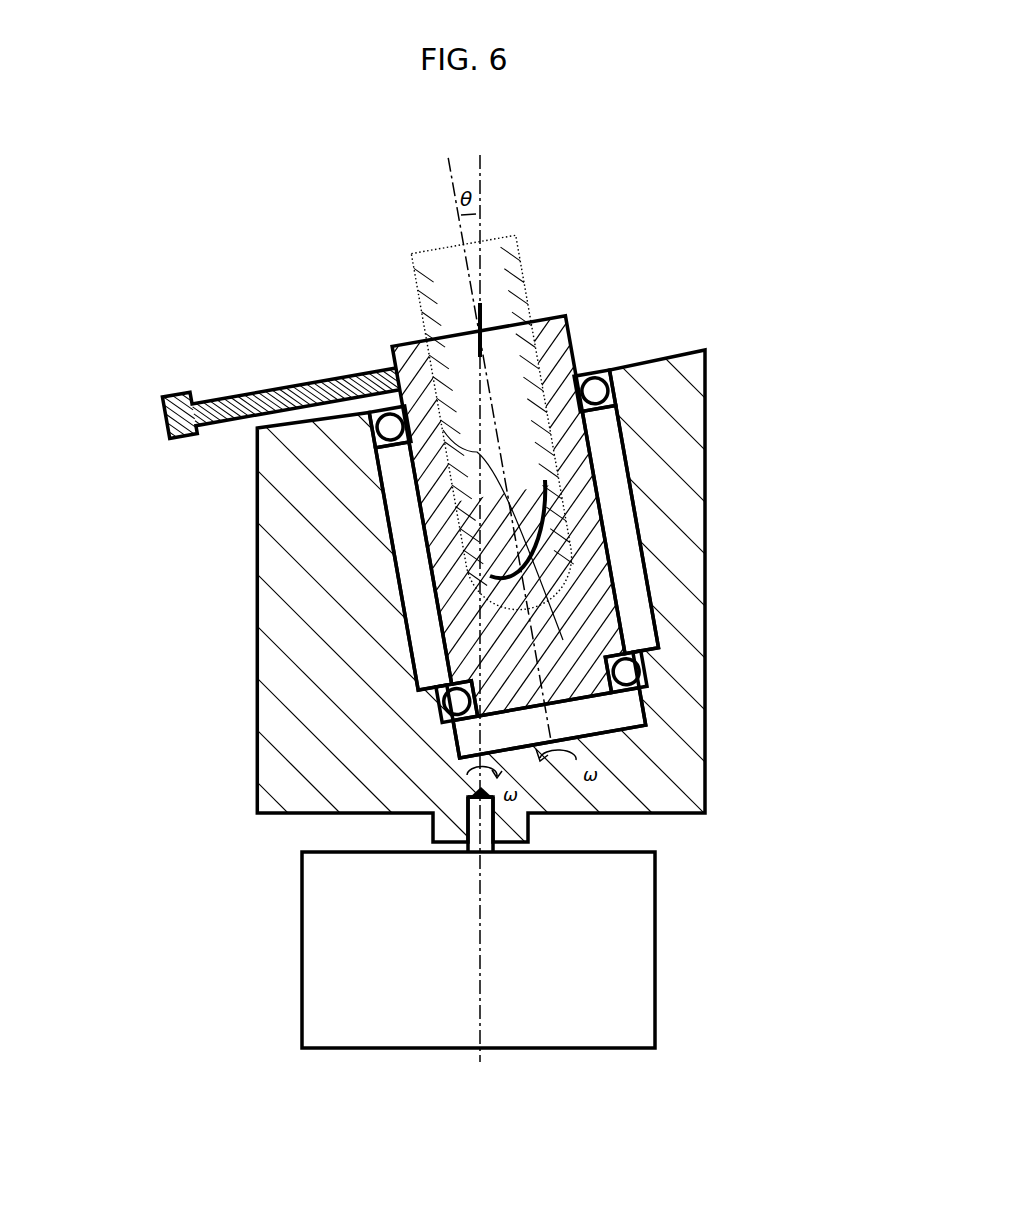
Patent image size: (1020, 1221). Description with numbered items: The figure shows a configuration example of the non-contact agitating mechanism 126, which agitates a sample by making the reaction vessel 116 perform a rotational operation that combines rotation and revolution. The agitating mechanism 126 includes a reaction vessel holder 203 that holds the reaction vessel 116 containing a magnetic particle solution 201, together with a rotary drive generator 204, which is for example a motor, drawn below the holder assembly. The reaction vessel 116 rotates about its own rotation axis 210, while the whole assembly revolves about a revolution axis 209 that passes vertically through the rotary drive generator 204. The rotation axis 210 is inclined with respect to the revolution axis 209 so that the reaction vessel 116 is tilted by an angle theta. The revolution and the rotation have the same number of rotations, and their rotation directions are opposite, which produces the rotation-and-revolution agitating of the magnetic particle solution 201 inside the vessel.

The non-contact agitating mechanism 126 is at (332, 300).
The rotation axis 210 is at (450, 203).
The reaction vessel 116 is at (523, 293).
The reaction vessel holder 203 is at (553, 347).
The magnetic particle solution 201 is at (398, 362).
The rotary drive generator 204 is at (637, 898).
The revolution axis 209 is at (481, 1052).